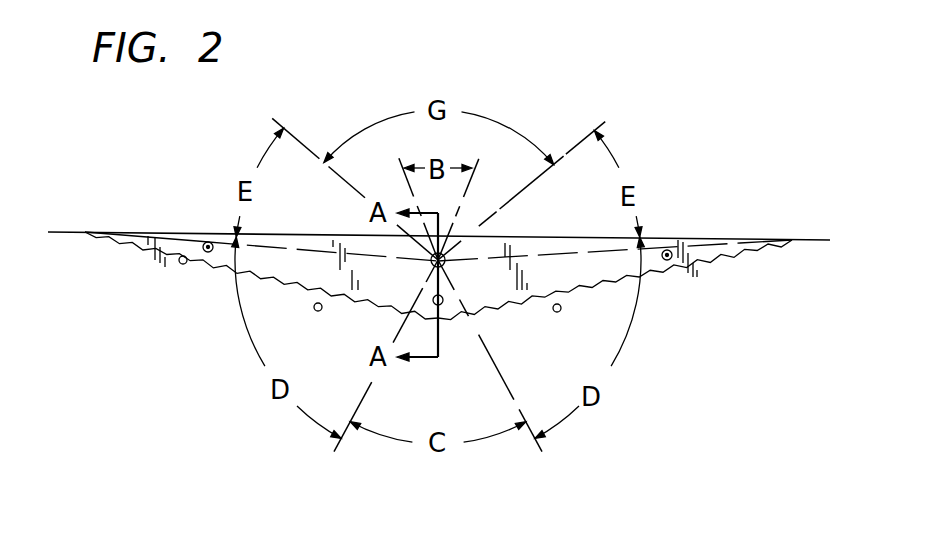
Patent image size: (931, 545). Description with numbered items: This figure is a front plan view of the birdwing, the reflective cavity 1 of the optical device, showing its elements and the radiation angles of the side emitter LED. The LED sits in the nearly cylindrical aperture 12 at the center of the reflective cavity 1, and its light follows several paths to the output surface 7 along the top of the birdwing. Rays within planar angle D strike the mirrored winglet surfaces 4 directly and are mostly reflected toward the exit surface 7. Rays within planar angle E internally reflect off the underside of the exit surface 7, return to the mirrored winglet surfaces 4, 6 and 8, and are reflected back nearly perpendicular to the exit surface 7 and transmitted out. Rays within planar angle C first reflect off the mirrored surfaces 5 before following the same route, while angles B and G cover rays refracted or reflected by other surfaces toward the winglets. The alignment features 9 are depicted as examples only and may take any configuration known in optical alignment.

The reflective cavity 1 is at (700, 263).
The mirrored winglet surfaces 4 is at (187, 288).
The mirrored surfaces 5 is at (452, 316).
The mirrored winglet surfaces 6 is at (147, 272).
The output surface 7 is at (679, 226).
The mirrored winglet surfaces 8 is at (92, 240).
The alignment features 9 is at (183, 256).
The cylindrical aperture 12 is at (458, 272).